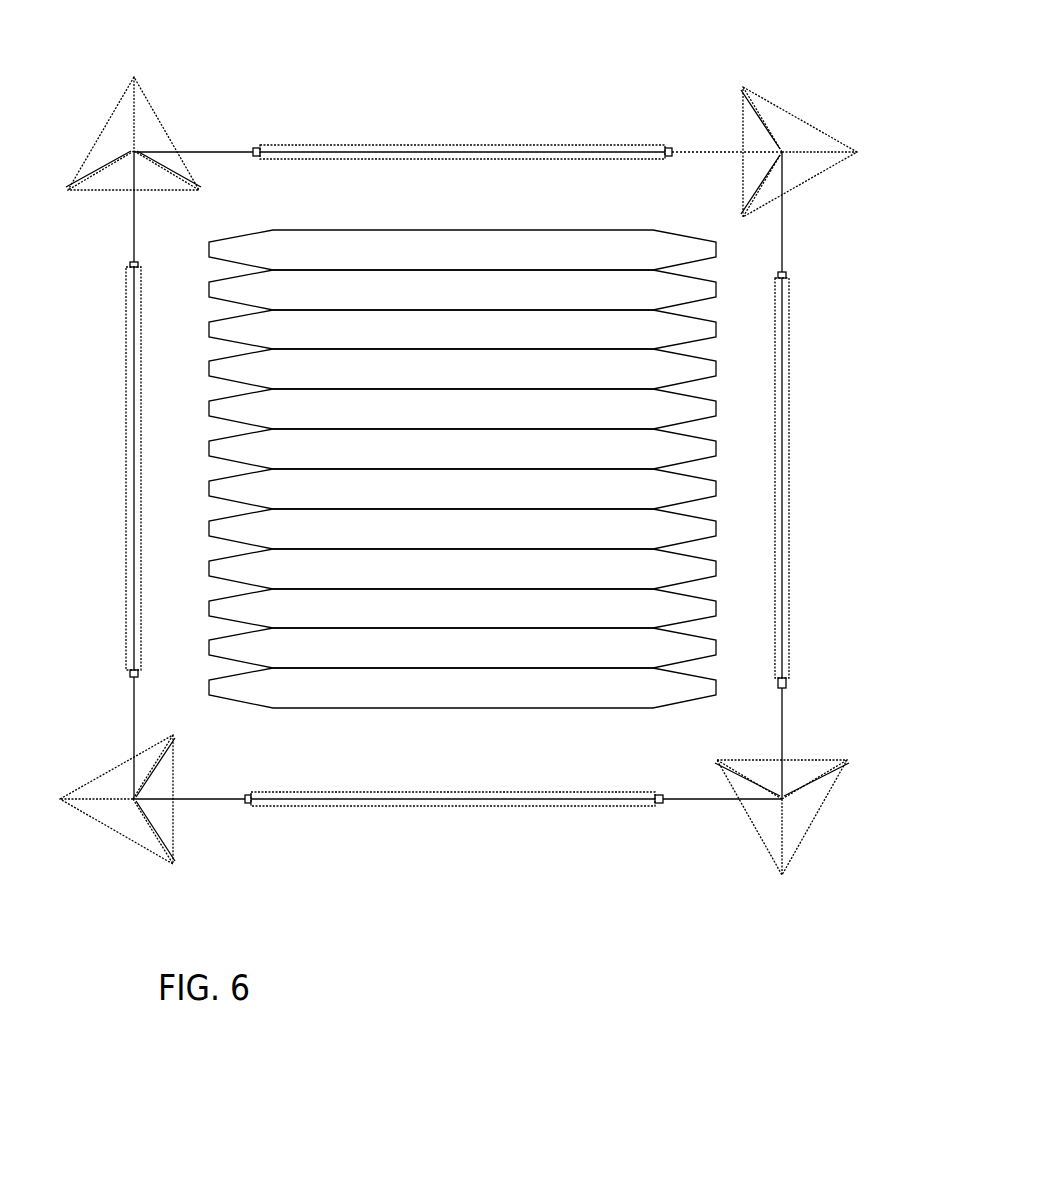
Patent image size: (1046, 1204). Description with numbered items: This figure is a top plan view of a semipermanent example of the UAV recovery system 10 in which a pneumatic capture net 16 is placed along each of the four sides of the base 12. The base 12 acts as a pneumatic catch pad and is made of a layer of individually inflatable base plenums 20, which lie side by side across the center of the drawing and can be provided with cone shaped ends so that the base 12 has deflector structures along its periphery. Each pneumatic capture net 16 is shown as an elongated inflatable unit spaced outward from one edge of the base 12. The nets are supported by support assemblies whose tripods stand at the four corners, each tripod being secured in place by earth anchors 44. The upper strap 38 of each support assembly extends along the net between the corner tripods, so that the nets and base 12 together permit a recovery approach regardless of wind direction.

The UAV recovery system 10 is at (381, 60).
The base 12 is at (420, 216).
The pneumatic capture net 16 is at (343, 143).
The base plenum 20 is at (328, 290).
The upper strap 38 is at (223, 152).
The earth anchor 44 is at (742, 84).